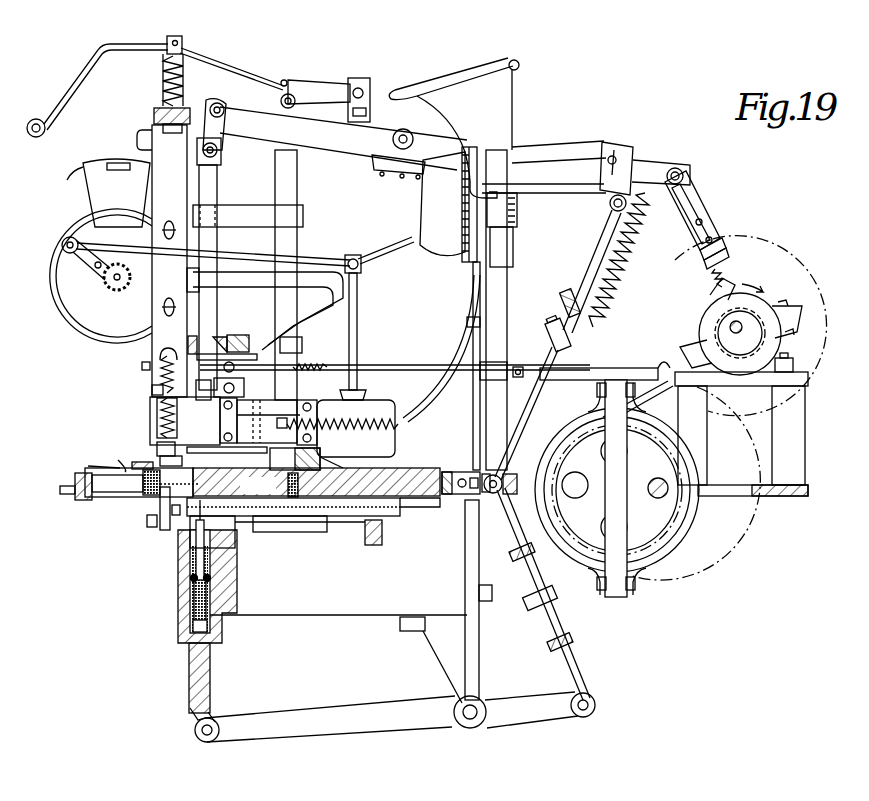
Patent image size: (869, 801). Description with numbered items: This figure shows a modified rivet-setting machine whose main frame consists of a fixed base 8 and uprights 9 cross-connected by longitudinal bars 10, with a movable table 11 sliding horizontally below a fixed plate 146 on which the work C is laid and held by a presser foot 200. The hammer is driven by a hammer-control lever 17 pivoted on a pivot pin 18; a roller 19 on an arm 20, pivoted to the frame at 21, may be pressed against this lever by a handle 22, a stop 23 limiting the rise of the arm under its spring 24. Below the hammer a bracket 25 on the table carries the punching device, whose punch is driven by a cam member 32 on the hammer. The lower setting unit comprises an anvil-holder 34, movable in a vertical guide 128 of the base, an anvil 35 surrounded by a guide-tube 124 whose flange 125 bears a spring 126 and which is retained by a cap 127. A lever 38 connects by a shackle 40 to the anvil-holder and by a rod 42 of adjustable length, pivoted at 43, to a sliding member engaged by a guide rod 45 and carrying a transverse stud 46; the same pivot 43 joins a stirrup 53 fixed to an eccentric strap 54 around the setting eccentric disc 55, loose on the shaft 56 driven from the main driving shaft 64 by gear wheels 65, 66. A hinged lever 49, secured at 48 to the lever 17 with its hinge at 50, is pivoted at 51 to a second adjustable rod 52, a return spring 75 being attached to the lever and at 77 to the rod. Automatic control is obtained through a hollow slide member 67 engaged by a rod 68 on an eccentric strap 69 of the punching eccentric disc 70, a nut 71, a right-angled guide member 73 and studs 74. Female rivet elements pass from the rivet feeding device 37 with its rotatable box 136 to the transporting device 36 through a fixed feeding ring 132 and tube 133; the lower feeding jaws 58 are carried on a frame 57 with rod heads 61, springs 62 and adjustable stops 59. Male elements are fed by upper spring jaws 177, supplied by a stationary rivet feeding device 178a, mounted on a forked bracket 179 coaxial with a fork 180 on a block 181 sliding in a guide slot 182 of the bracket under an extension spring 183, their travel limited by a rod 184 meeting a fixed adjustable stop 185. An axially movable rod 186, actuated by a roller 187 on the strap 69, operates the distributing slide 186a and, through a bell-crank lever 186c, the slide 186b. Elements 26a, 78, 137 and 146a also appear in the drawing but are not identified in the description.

The fixed base 8 is at (395, 598).
The uprights 9 is at (296, 186).
The longitudinal bars 10 is at (256, 150).
The movable table 11 is at (415, 498).
The hammer-control lever 17 is at (553, 146).
The pivot pin 18 is at (403, 130).
The roller 19 is at (296, 102).
The arm 20 is at (314, 80).
The pivot 21 is at (360, 93).
The handle 22 is at (47, 130).
The stop 23 is at (182, 53).
The spring 24 is at (162, 70).
The bracket 25 is at (398, 438).
The plate 26a is at (208, 458).
The cam member 32 is at (340, 316).
The anvil-holder 34 is at (210, 675).
The anvil 35 is at (192, 548).
The transporting device 36 is at (248, 535).
The rivet feeding device 37 is at (430, 412).
The lever 38 is at (325, 735).
The shackle 40 is at (208, 718).
The rod of adjustable length 42 is at (570, 660).
The pivot 43 is at (480, 520).
The guide rod 45 is at (465, 498).
The transverse stud 46 is at (455, 478).
The securing point 48 is at (392, 178).
The hinged lever 49 is at (565, 182).
The hinge 50 is at (525, 182).
The pivot 51 is at (610, 207).
The rod of adjustable length 52 is at (530, 410).
The stirrup 53 is at (497, 494).
The eccentric strap 54 is at (585, 545).
The setting eccentric disc 55 is at (645, 510).
The shaft 56 is at (647, 488).
The frame 57 is at (145, 492).
The lower feeding jaws 58 is at (150, 515).
The adjustable stops 59 is at (175, 520).
The head 61 is at (345, 530).
The spring 62 is at (285, 532).
The main driving shaft 64 is at (730, 322).
The gear wheel 65 is at (768, 400).
The gear wheel 66 is at (748, 470).
The hollow slide member 67 is at (700, 200).
The rod 68 is at (704, 283).
The eccentric strap 69 is at (720, 312).
The punching eccentric disc 70 is at (722, 336).
The nut 71 is at (726, 247).
The right-angled guide member 73 is at (728, 256).
The studs 74 is at (712, 222).
The return spring 75 is at (618, 280).
The spring attachment point 77 is at (583, 330).
The end cap 78 is at (87, 500).
The guide-tube 124 is at (192, 570).
The flange 125 is at (195, 588).
The spring 126 is at (222, 633).
The cap 127 is at (210, 592).
The vertical guide 128 is at (210, 568).
The fixed feeding ring 132 is at (358, 498).
The tube 133 is at (316, 482).
The rotatable box 136 is at (438, 232).
The block 137 is at (362, 545).
The fixed plate 146 is at (85, 473).
The bracket 146a is at (276, 476).
The upper spring jaws 177 is at (158, 455).
The stationary rivet feeding device 178a is at (92, 313).
The forked bracket 179 is at (152, 412).
The fork 180 is at (152, 388).
The block 181 is at (185, 421).
The guide slot 182 is at (227, 459).
The spring 183 is at (365, 420).
The rod 184 is at (225, 350).
The fixed adjustable stop 185 is at (305, 338).
The axially movable rod 186 is at (426, 366).
The distributing slide 186a is at (146, 366).
The slide 186b is at (466, 320).
The bell-crank lever 186c is at (535, 325).
The roller 187 is at (682, 388).
The presser foot 200 is at (125, 460).
The work C is at (115, 458).